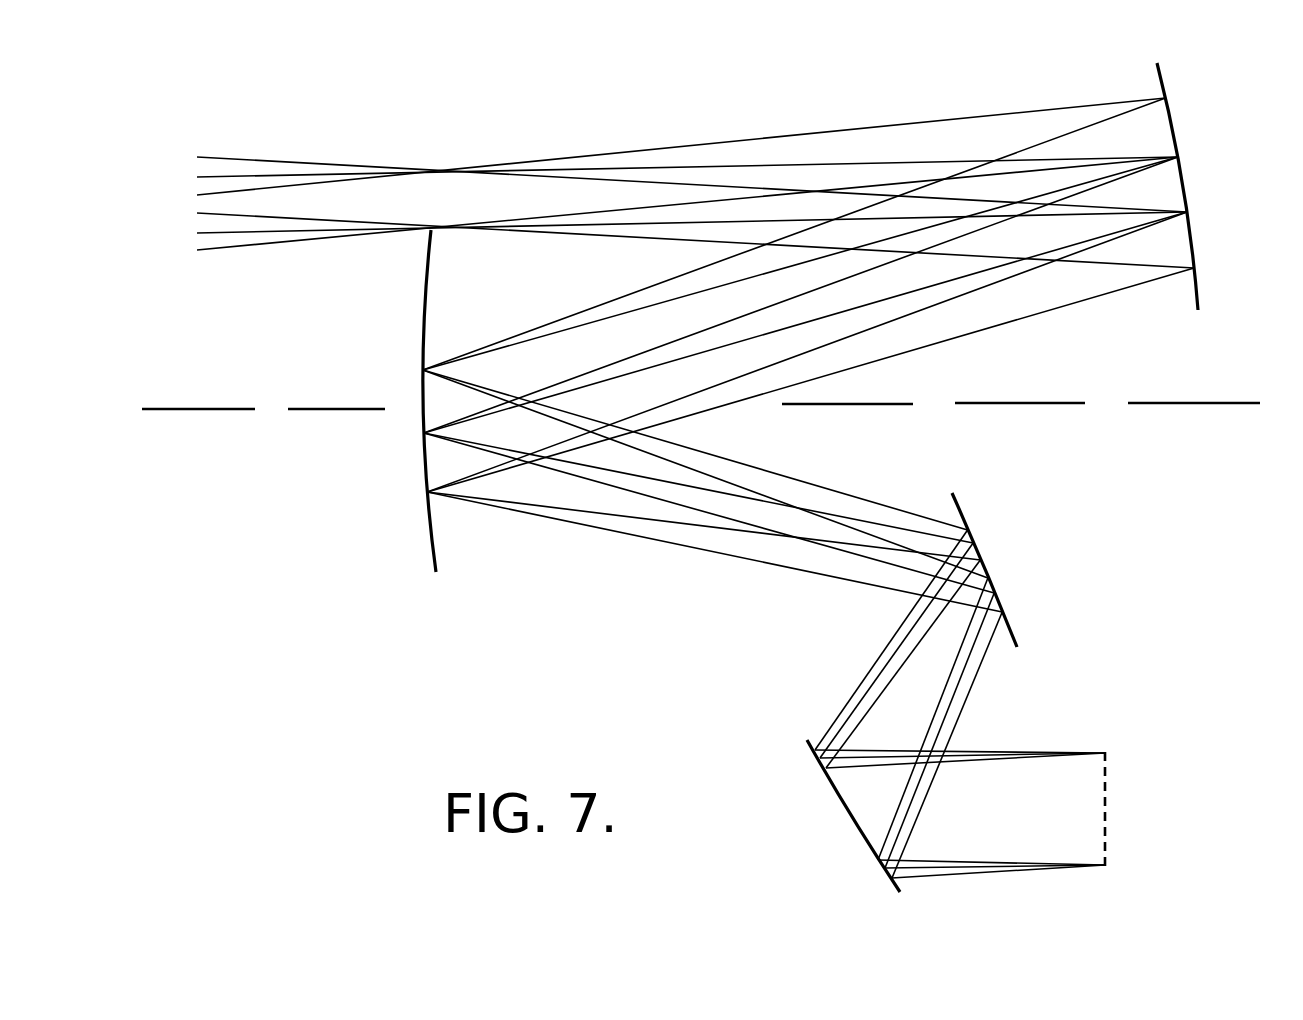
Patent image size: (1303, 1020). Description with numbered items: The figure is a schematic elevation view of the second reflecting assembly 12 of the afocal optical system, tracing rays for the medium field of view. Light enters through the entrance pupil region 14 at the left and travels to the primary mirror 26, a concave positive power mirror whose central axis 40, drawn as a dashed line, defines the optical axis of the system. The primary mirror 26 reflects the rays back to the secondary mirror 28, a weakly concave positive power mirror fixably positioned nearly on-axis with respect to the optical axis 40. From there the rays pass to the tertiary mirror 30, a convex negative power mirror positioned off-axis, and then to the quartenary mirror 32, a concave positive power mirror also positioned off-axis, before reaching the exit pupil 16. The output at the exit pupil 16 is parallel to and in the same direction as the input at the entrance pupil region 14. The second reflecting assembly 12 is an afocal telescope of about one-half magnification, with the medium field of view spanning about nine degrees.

The optical system 12 is at (684, 580).
The incoming light rays 14 is at (187, 151).
The image plane 16 is at (1107, 783).
The first mirror 26 is at (1162, 77).
The second mirror 28 is at (421, 312).
The third mirror 30 is at (960, 505).
The fourth mirror 32 is at (892, 885).
The optical axis 40 is at (1185, 403).